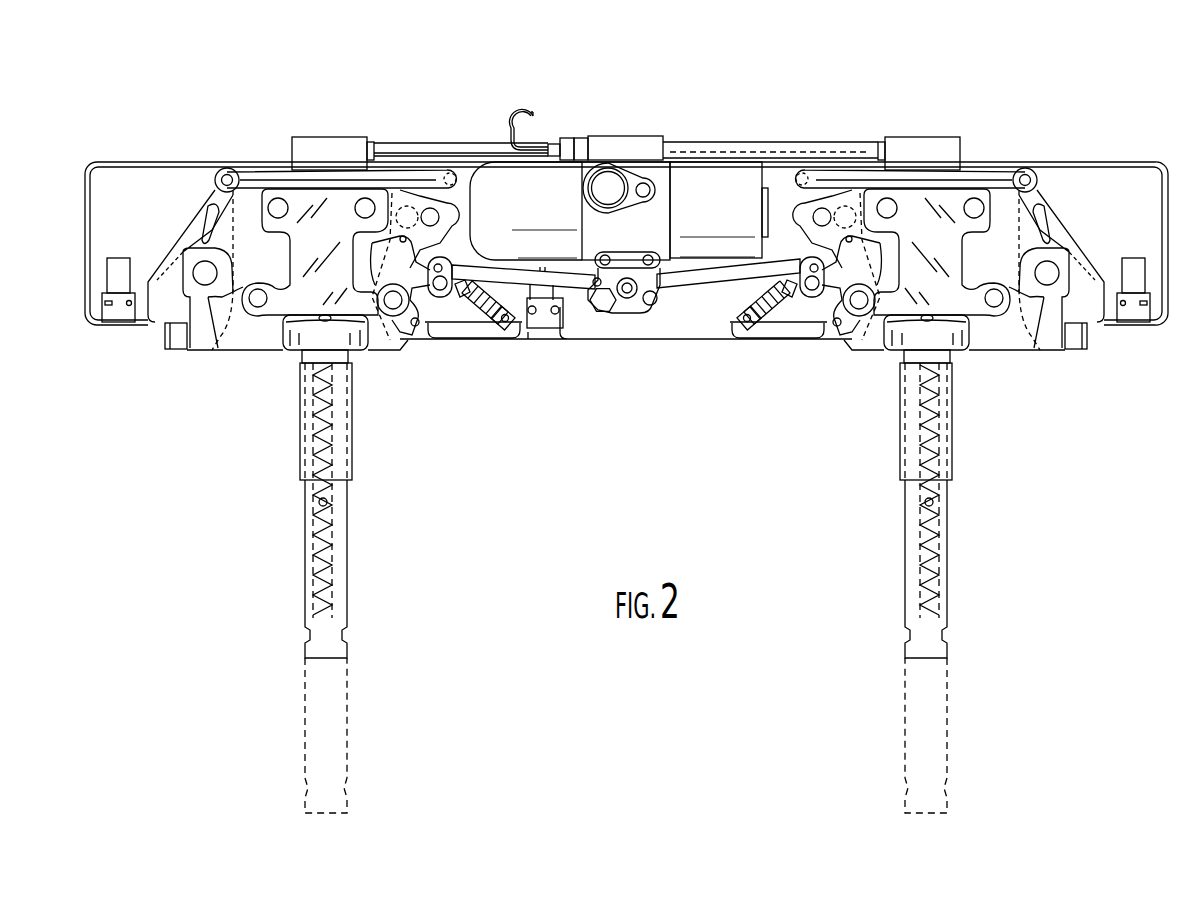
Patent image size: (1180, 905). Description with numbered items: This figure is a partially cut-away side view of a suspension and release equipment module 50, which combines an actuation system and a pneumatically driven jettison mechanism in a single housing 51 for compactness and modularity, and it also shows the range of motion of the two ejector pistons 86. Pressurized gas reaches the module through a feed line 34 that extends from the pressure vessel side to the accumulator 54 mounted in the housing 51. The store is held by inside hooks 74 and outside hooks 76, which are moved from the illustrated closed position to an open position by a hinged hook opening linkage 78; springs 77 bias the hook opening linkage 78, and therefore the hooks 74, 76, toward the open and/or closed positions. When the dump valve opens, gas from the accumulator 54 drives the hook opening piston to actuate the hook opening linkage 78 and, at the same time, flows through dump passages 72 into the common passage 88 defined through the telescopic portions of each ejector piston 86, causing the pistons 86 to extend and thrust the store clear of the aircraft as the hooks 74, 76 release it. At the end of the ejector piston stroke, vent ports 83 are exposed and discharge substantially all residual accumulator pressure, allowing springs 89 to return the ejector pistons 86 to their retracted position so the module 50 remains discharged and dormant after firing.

The feed line 34 is at (519, 113).
The suspension and release equipment (S & RE) module 50 is at (670, 120).
The housing 51 is at (164, 157).
The accumulator 54 is at (738, 170).
The dump passages 72 is at (445, 147).
The inside hooks 74 is at (413, 342).
The outside hooks 76 is at (180, 340).
The springs 77 is at (487, 325).
The hook opening linkage 78 is at (255, 168).
The vent ports 83 is at (330, 520).
The ejector pistons 86 is at (353, 470).
The common passage 88 is at (312, 430).
The springs 89 is at (330, 435).